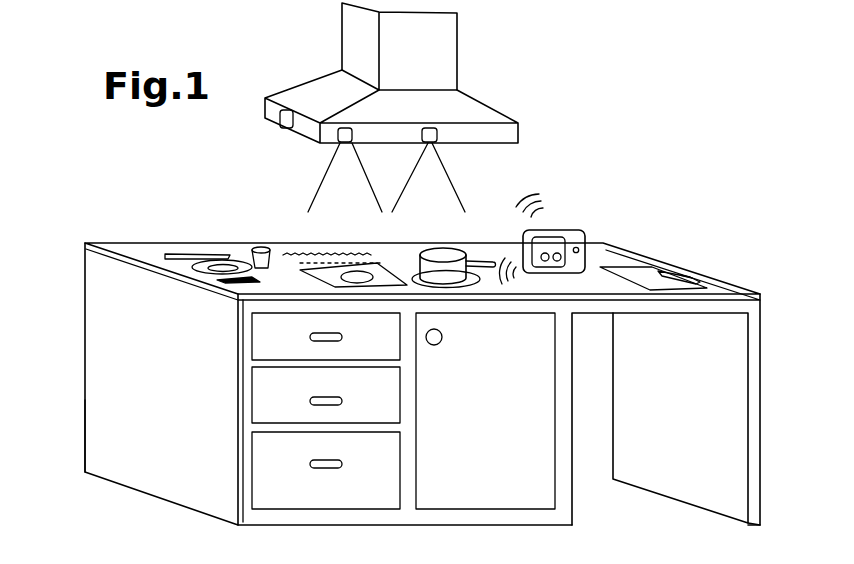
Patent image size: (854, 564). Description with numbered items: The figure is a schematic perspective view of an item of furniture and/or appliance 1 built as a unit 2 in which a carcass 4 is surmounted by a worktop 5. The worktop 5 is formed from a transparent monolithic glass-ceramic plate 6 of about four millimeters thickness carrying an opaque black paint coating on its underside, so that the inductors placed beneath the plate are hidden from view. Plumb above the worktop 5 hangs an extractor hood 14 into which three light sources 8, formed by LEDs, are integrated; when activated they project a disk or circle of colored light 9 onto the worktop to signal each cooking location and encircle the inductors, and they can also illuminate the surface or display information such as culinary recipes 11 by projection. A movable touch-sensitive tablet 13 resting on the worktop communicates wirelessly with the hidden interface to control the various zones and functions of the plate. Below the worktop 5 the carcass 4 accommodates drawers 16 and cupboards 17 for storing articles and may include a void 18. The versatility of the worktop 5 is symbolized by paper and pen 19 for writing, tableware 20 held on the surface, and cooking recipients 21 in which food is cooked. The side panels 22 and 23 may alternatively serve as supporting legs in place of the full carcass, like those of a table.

The item of furniture and/or appliance 1 is at (677, 183).
The unit 2 is at (128, 244).
The carcass 4 is at (114, 320).
The worktop 5 is at (612, 258).
The glass-ceramic plate 6 is at (748, 293).
The light sources 8 is at (345, 130).
The circle of colored light 9 is at (480, 278).
The culinary recipes 11 is at (335, 267).
The touch-sensitive tablet 13 is at (572, 237).
The extractor hood 14 is at (445, 48).
The drawers 16 is at (263, 482).
The cupboards 17 is at (540, 477).
The void 18 is at (608, 396).
The paper and pen 19 is at (687, 273).
The tableware 20 is at (210, 263).
The cooking recipients 21 is at (445, 255).
The panel 22 is at (760, 390).
The panel 23 is at (93, 423).